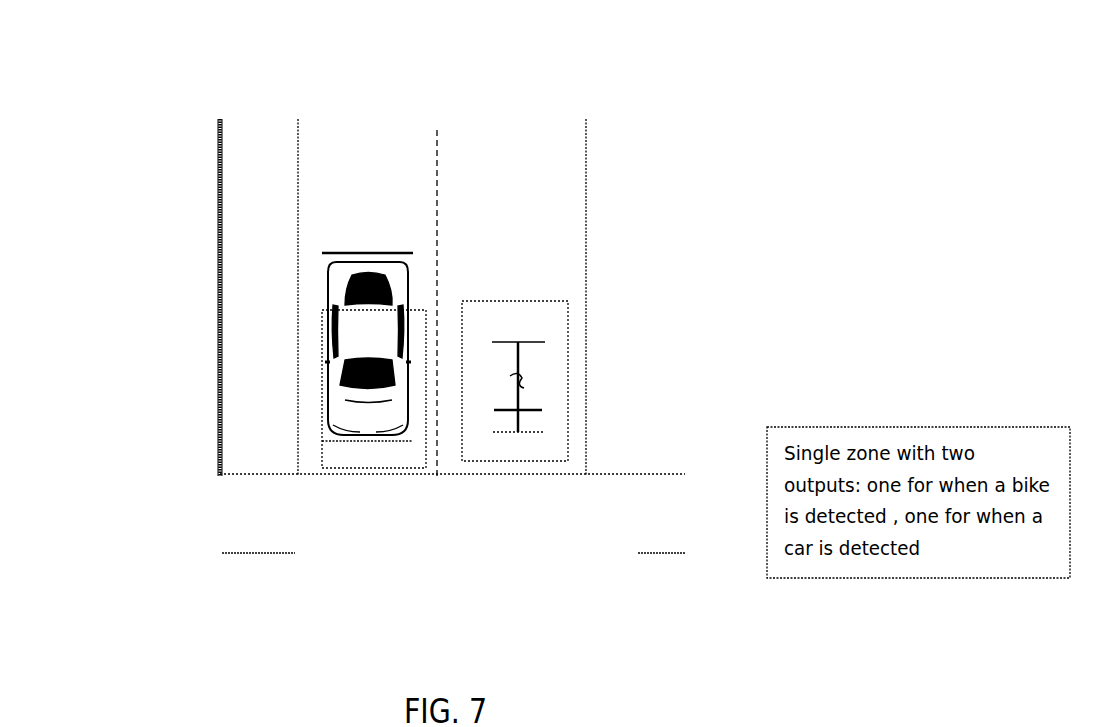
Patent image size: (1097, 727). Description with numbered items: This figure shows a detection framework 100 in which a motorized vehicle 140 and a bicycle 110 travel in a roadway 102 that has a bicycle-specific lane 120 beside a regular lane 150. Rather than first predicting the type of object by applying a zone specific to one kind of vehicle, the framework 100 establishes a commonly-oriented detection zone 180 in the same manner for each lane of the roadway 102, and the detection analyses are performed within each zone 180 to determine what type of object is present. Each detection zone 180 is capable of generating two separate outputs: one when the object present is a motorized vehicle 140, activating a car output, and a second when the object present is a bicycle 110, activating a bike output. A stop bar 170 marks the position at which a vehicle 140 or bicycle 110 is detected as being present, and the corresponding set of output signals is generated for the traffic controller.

The detection framework 100 is at (658, 152).
The roadway 102 is at (455, 170).
The bicycle 110 is at (532, 403).
The bicycle-specific lane 120 is at (255, 215).
The motorized vehicle 140 is at (328, 316).
The regular lane 150 is at (532, 229).
The stop bar 170 is at (192, 553).
The detection zone 180 is at (570, 316).